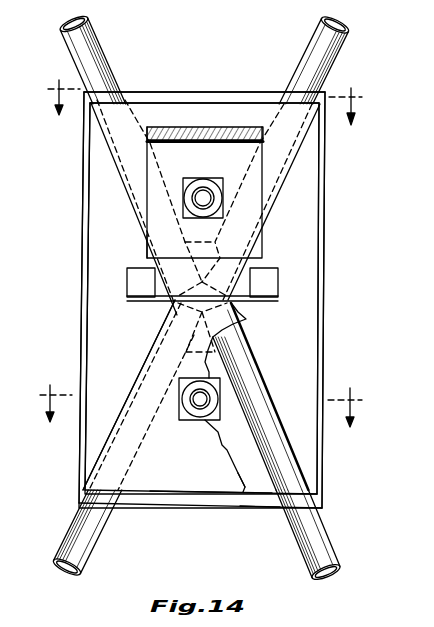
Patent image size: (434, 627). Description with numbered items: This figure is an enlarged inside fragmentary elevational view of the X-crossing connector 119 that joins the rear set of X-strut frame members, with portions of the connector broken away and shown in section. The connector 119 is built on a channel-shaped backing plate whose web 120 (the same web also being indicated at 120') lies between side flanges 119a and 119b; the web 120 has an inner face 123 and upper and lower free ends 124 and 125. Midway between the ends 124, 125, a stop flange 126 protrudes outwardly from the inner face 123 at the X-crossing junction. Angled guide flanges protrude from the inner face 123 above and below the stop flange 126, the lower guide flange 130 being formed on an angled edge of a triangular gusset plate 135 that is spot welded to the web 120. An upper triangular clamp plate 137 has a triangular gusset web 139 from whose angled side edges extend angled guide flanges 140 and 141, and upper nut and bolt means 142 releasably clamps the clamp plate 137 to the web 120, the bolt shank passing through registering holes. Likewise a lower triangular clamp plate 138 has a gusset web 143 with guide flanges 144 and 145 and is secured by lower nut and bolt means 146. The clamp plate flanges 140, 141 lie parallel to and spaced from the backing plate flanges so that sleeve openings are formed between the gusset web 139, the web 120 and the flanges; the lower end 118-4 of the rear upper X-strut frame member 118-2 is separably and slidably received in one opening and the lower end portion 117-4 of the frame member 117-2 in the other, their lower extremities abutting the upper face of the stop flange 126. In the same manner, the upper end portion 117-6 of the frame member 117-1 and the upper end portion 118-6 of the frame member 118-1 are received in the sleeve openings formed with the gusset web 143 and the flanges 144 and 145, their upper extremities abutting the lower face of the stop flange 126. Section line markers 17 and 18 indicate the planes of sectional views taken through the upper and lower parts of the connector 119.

The rear X-strut frame member 117-1 is at (72, 527).
The rear X-strut frame member 117-2 is at (336, 53).
The lower end portion of frame member 117-2 117-4 is at (247, 268).
The upper end portion of frame member 117-1 117-6 is at (157, 327).
The rear X-strut frame member 118-1 is at (326, 542).
The rear upper X-strut frame member 118-2 is at (78, 47).
The lower end of frame member 118-2 118-4 is at (127, 182).
The upper end portion of frame member 118-1 118-6 is at (240, 343).
The X-crossing connector 119 is at (333, 306).
The side flange 119a is at (83, 238).
The side flange 119b is at (327, 190).
The channel web 120 is at (260, 530).
The weld 120' is at (94, 267).
The inner face 123 is at (168, 317).
The upper free end 124 is at (200, 92).
The lower free end 125 is at (147, 506).
The stop flange 126 is at (256, 303).
The angled guide flange 130 is at (250, 448).
The triangular gusset plate 135 is at (254, 473).
The upper triangular clamp plate 137 is at (226, 104).
The lower triangular clamp plate 138 is at (180, 496).
The triangular gusset web 139 is at (167, 115).
The angled guide flange 140 is at (131, 204).
The angled guide flange 141 is at (280, 203).
The upper nut and bolt means 142 is at (198, 182).
The triangular gusset web 143 is at (129, 395).
The guide flange 144 is at (132, 381).
The guide flange 145 is at (280, 400).
The lower nut and bolt means 146 is at (190, 412).
The section line 17- 17 is at (204, 102).
The section line 18- 18 is at (202, 406).